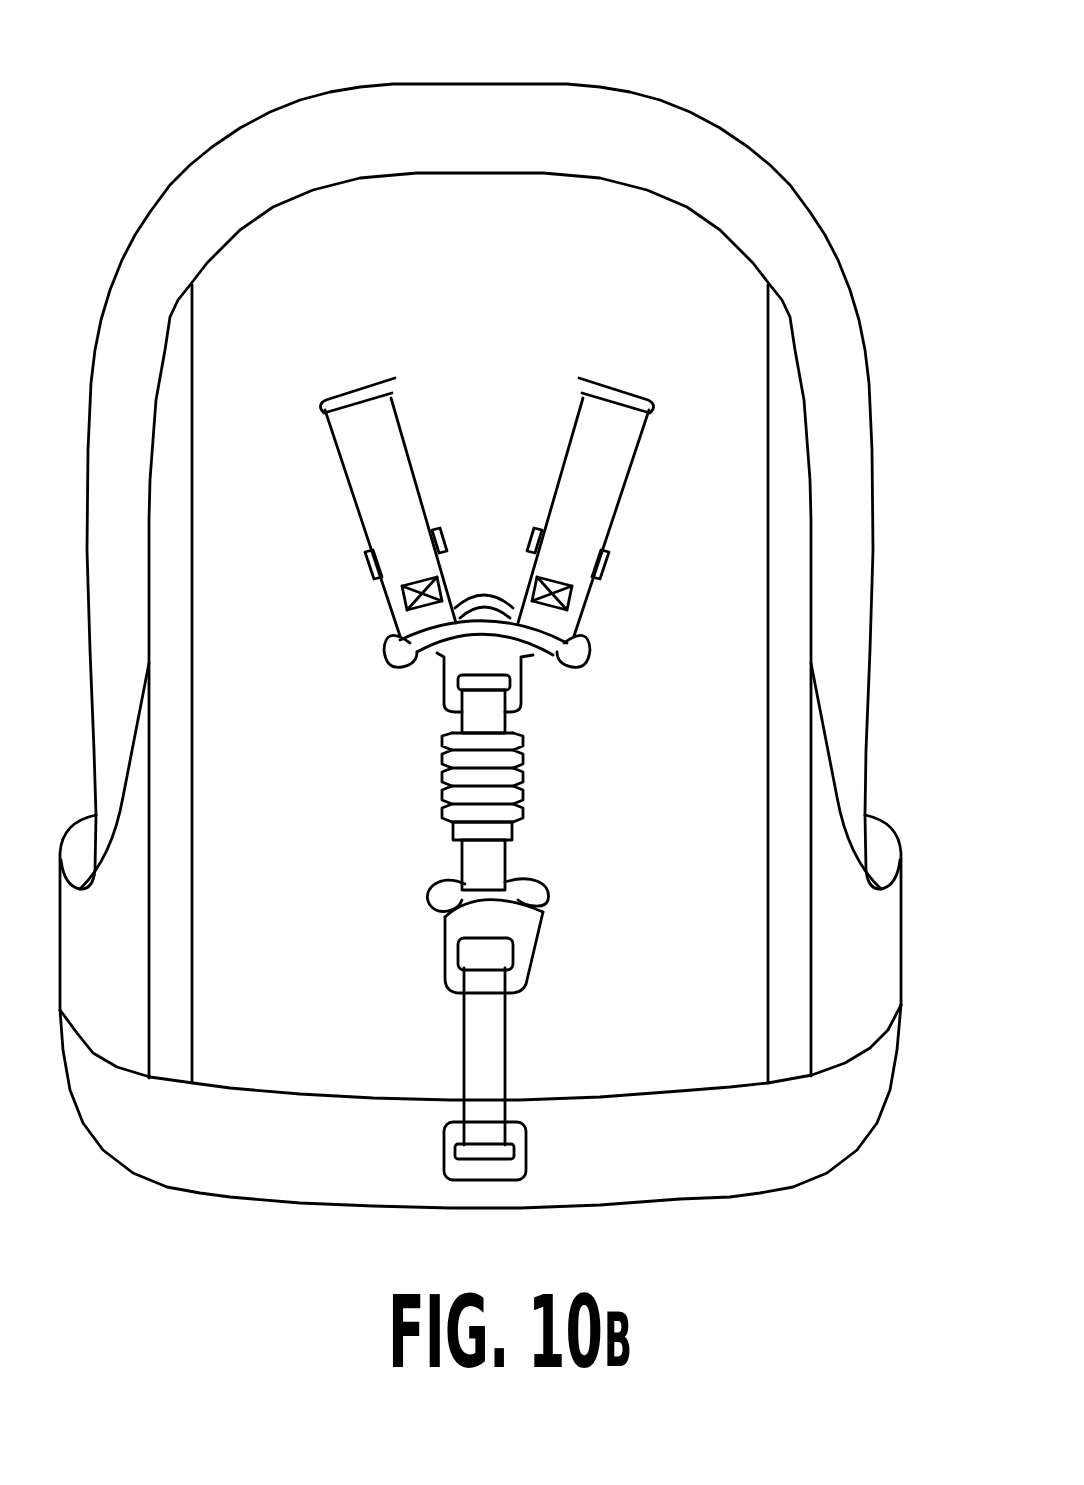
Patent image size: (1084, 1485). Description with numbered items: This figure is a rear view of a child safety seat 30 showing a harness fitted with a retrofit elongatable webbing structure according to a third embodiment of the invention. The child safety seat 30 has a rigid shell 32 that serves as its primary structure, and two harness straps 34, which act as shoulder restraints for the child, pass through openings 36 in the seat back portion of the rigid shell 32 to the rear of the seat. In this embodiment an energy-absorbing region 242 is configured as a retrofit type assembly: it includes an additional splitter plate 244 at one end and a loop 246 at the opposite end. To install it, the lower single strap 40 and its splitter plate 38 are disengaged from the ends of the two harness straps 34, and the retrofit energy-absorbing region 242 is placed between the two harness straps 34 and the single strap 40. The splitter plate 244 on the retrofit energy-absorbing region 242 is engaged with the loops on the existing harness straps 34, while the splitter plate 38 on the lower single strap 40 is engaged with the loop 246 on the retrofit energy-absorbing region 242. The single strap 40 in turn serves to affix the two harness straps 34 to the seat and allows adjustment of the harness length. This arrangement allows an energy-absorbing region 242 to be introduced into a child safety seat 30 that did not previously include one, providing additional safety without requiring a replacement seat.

The child safety seat 30 is at (790, 114).
The rigid shell 32 is at (572, 200).
The harness straps 34 is at (577, 495).
The openings 36 is at (577, 377).
The additional splitter plate 244 is at (575, 663).
The energy-absorbing region 242 is at (565, 745).
The loop 246 is at (487, 877).
The splitter plate 38 is at (507, 922).
The single strap 40 is at (483, 1033).